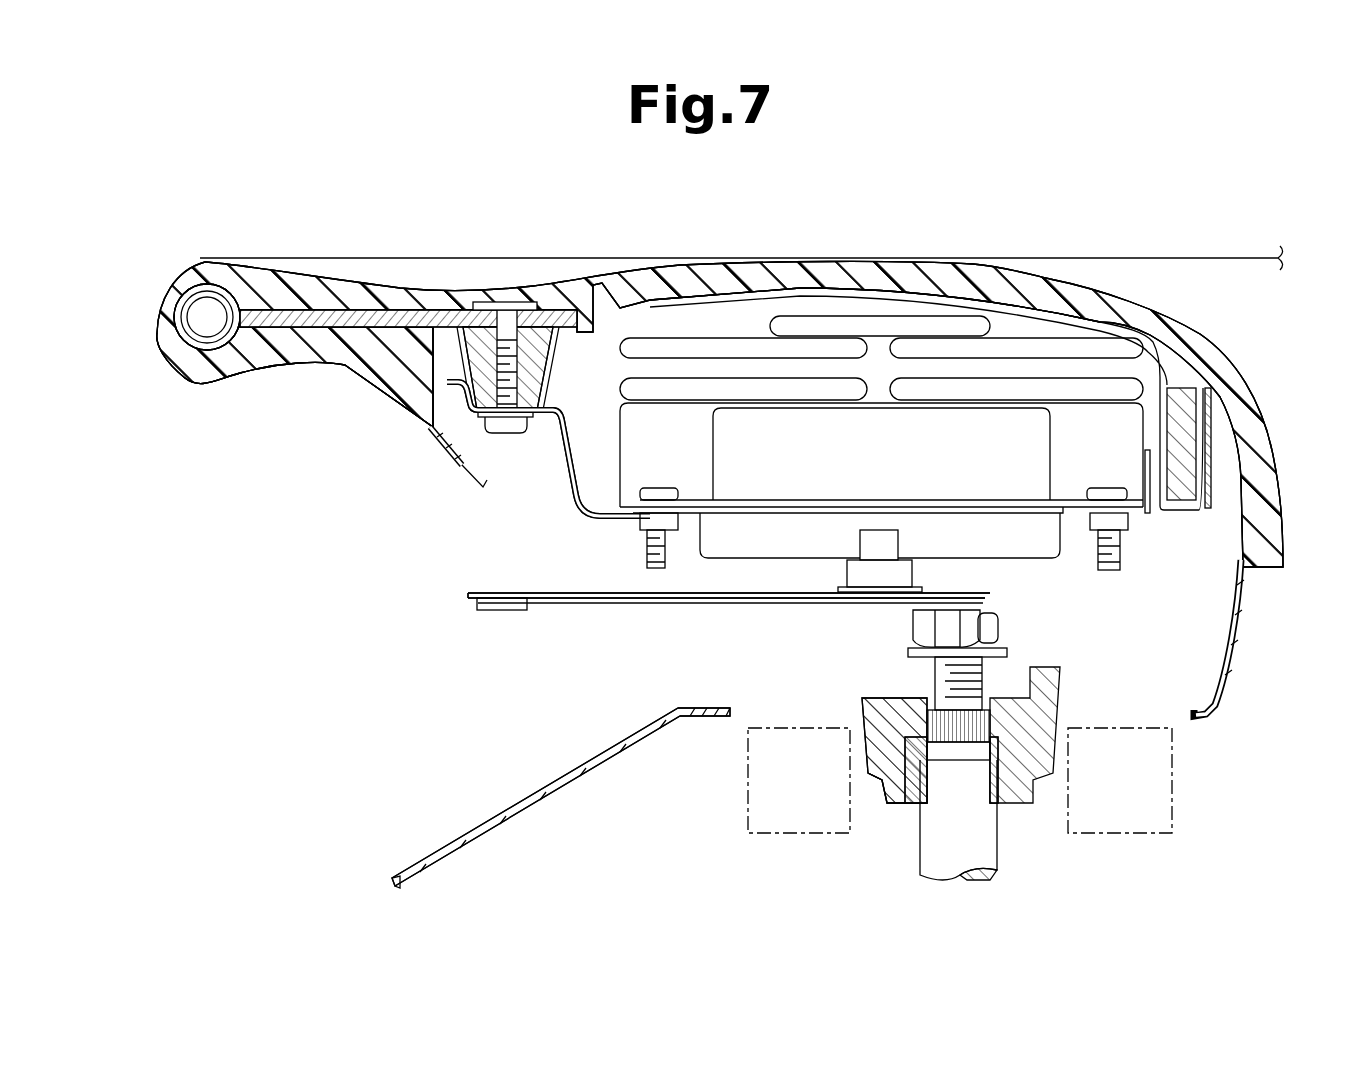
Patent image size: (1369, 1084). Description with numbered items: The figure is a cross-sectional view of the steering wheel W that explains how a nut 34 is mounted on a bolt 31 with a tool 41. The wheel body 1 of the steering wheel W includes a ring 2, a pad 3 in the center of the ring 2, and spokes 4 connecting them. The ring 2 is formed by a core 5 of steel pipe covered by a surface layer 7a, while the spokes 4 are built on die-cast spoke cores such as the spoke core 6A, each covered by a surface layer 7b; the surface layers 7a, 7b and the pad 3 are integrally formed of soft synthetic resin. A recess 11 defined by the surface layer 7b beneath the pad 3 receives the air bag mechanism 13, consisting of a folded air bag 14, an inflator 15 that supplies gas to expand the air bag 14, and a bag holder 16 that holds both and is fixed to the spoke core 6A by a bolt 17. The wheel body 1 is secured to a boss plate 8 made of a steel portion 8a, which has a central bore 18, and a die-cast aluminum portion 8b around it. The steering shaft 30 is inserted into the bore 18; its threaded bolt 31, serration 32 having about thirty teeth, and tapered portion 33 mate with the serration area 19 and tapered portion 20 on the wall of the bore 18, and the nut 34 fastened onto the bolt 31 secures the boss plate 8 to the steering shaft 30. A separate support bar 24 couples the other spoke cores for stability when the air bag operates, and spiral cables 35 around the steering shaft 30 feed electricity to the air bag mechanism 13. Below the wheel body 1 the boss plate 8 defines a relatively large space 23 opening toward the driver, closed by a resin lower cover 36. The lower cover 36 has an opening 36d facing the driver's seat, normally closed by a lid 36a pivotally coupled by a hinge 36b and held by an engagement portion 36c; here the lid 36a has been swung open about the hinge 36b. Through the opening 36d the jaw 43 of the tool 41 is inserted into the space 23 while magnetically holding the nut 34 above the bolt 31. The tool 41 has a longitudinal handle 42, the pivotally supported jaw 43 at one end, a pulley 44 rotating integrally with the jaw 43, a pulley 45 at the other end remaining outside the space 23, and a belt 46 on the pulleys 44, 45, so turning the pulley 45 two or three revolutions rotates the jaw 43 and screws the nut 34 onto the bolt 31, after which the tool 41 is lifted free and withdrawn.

The wheel body 1 is at (497, 250).
The ring 2 is at (212, 262).
The pad 3 is at (878, 263).
The spokes 4 is at (335, 362).
The core 5 is at (170, 288).
The spoke core 6A is at (308, 337).
The surface layer 7a is at (168, 368).
The surface layer 7b is at (400, 385).
The boss plate 8 is at (918, 878).
The steel portion 8a is at (913, 793).
The die-cast aluminum portion 8b is at (890, 797).
The recess 11 is at (708, 339).
The air bag mechanism 13 is at (625, 537).
The air bag 14 is at (680, 358).
The inflator 15 is at (712, 435).
The bag holder 16 is at (567, 440).
The bolt 17 is at (517, 434).
The central bore 18 is at (983, 750).
The serration area 19 is at (1013, 727).
The tapered portion 20 is at (987, 790).
The space 23 is at (497, 538).
The support bar 24 is at (1185, 500).
The steering shaft 30 is at (975, 878).
The bolt 31 is at (982, 677).
The serration 32 is at (947, 730).
The tapered portion 33 is at (908, 762).
The nut 34 is at (998, 628).
The spiral cables 35 is at (748, 802).
The lower cover 36 is at (447, 453).
The lid 36a is at (513, 820).
The hinge 36b is at (677, 720).
The engagement portion 36c is at (395, 878).
The opening 36d is at (484, 426).
The tool 41 is at (563, 645).
The handle 42 is at (683, 593).
The jaw 43 is at (913, 618).
The pulley 44 is at (987, 607).
The pulley 45 is at (473, 608).
The belt 46 is at (697, 605).
The steering wheel W is at (1072, 250).